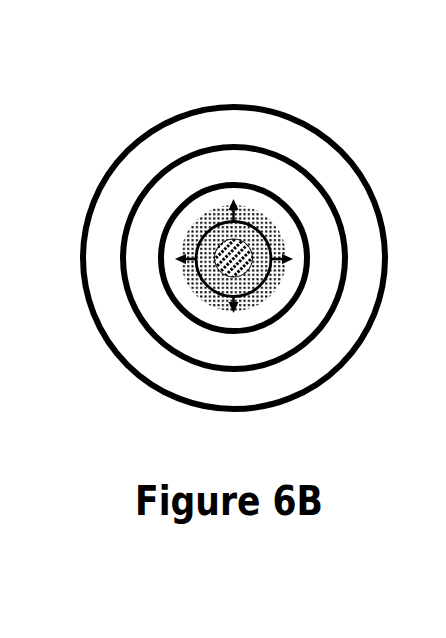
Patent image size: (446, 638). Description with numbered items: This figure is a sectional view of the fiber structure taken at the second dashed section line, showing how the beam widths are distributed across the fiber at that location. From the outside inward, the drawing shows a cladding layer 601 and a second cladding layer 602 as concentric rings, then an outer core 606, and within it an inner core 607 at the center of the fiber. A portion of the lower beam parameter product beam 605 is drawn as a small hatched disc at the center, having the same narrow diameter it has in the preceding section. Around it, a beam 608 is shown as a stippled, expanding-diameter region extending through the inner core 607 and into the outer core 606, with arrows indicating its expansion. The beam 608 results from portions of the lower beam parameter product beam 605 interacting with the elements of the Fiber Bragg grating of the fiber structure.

The cladding layer 601 is at (235, 125).
The cladding layer 602 is at (297, 190).
The outer core 606 is at (297, 265).
The inner core 607 is at (253, 292).
The beam 608 is at (218, 300).
The lower beam parameter product beam 605 is at (220, 263).